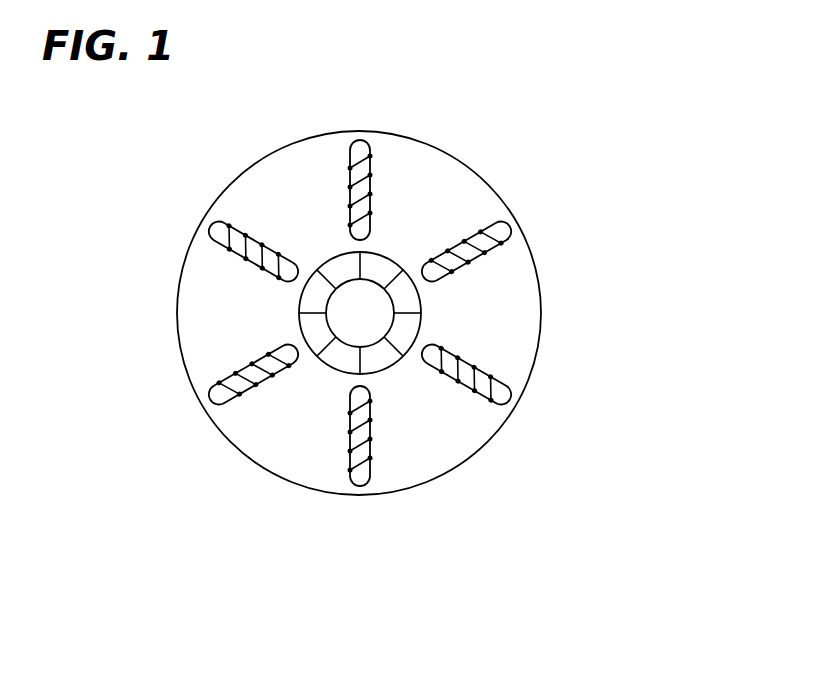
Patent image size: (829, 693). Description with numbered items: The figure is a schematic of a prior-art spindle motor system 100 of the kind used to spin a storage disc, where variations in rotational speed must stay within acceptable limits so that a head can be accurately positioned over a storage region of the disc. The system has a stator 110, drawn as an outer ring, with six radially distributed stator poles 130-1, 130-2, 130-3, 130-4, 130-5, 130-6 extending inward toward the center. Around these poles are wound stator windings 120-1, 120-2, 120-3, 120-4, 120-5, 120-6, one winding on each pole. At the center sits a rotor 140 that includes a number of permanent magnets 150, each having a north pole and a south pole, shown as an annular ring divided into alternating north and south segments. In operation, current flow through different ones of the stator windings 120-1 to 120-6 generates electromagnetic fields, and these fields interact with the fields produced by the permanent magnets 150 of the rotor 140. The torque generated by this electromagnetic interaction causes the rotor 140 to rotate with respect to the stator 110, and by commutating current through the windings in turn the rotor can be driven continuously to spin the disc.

The spindle motor system 100 is at (146, 154).
The stator 110 is at (273, 175).
The stator winding 120-1 is at (372, 174).
The stator winding 120-2 is at (490, 236).
The stator winding 120-3 is at (495, 376).
The stator winding 120-4 is at (373, 464).
The stator winding 120-5 is at (237, 404).
The stator winding 120-6 is at (234, 252).
The stator pole 130-1 is at (351, 173).
The stator pole 130-2 is at (500, 250).
The stator pole 130-3 is at (502, 407).
The stator pole 130-4 is at (349, 490).
The stator pole 130-5 is at (208, 392).
The stator pole 130-6 is at (207, 226).
The rotor 140 is at (422, 322).
The permanent magnets 150 is at (323, 268).